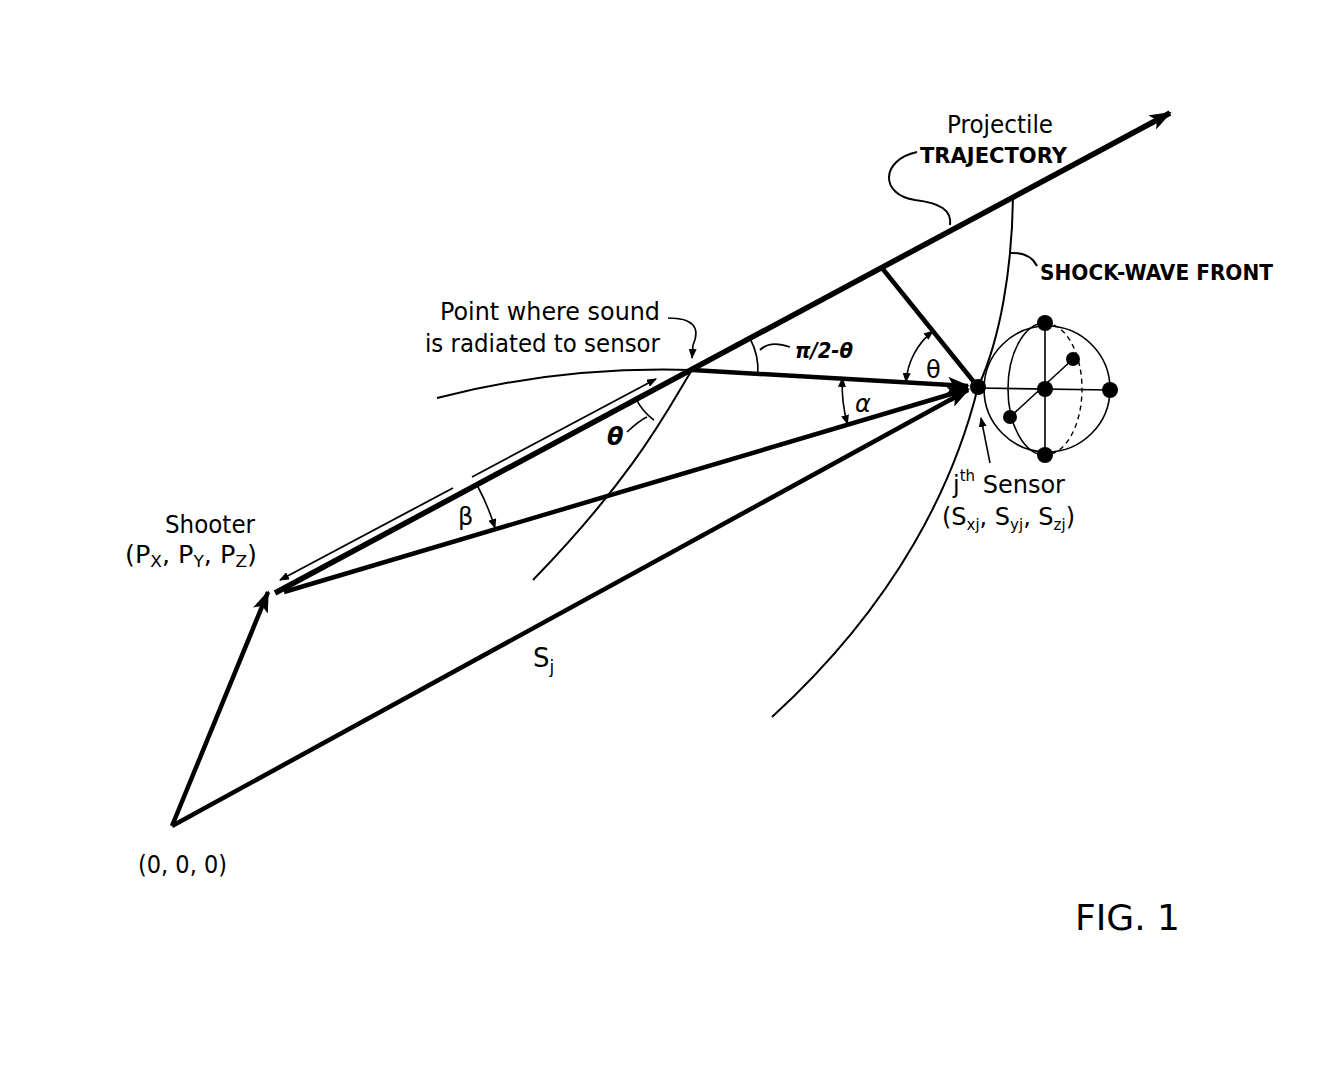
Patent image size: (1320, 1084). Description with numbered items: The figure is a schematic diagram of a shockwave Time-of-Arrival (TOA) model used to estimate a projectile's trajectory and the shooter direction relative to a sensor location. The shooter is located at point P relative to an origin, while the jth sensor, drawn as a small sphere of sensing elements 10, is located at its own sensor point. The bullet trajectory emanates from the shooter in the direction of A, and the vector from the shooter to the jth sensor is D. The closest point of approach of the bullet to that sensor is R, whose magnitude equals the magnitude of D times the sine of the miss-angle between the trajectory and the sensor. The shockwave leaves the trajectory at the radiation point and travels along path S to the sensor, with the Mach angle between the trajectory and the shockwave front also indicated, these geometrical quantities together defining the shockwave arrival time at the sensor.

The sensor (acoustic sensor array) 10 is at (1092, 457).
The shooter position vector P is at (220, 709).
The vector from the shooter to the jth sensor D is at (626, 490).
The shockwave path vector to the jth sensor S is at (812, 390).
The closest point of approach vector R is at (922, 313).
The trajectory direction vector A is at (468, 479).